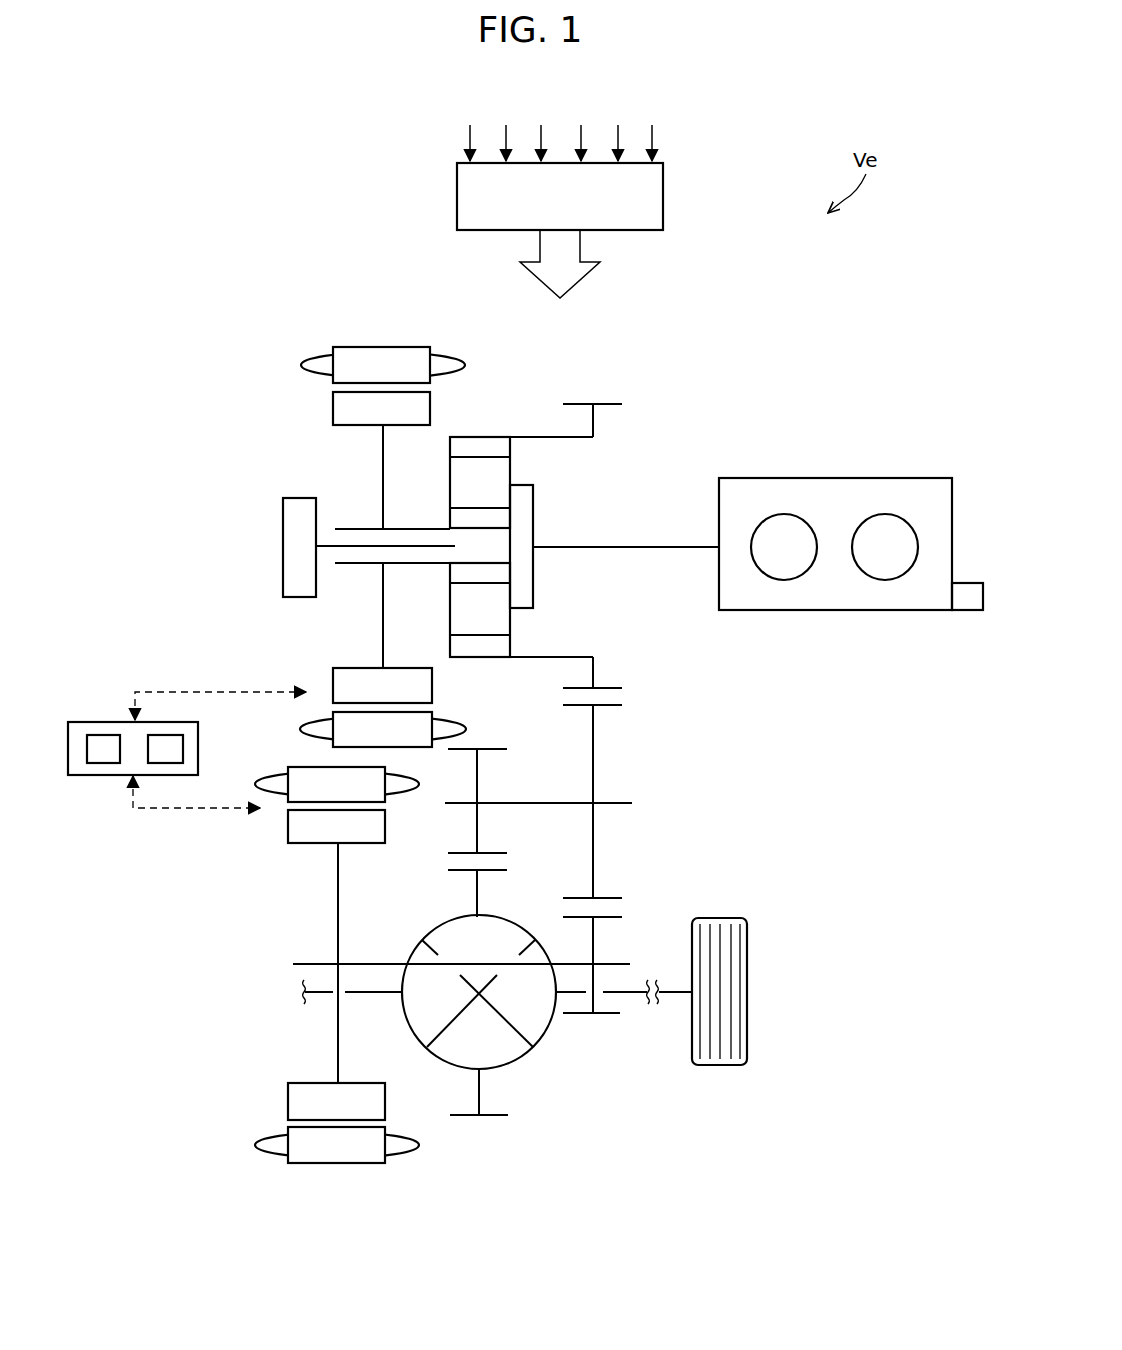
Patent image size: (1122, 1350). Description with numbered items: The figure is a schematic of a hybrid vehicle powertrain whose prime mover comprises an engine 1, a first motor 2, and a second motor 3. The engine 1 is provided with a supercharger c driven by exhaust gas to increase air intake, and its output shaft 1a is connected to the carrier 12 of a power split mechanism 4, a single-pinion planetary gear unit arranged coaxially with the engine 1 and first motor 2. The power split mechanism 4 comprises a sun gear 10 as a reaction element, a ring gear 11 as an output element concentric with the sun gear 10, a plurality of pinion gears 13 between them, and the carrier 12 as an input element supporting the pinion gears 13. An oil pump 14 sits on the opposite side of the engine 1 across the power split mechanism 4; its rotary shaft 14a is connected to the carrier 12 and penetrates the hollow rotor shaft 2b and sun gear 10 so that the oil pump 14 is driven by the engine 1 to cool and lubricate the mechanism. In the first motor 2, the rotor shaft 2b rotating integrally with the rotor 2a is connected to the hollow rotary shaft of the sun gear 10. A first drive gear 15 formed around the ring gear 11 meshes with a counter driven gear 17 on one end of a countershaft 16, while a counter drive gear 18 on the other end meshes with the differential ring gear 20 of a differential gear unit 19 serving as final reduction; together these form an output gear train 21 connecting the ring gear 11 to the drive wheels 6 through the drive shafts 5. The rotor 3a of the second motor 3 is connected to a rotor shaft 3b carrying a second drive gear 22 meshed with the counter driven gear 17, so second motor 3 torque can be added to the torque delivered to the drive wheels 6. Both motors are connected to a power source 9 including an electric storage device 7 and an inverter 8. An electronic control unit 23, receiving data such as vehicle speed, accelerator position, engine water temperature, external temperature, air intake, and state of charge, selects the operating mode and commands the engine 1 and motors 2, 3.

The engine 1 is at (843, 612).
The output shaft 1a is at (672, 542).
The supercharger c is at (973, 612).
The first motor 2 is at (340, 522).
The rotor 2a is at (332, 410).
The rotor shaft 2b is at (352, 565).
The second motor 3 is at (304, 981).
The rotor 3a is at (287, 833).
The rotor shaft 3b is at (380, 962).
The power split mechanism 4 is at (528, 521).
The drive shafts 5 is at (637, 998).
The drive wheels 6 is at (718, 1067).
The electric storage device 7 is at (100, 765).
The inverter 8 is at (185, 747).
The power source 9 is at (150, 752).
The sun gear 10 is at (450, 574).
The ring gear 11 is at (483, 437).
The carrier 12 is at (533, 509).
The pinion gears 13 is at (490, 460).
The oil pump 14 is at (297, 599).
The rotary shaft 14a is at (323, 545).
The first drive gear 15 is at (603, 403).
The countershaft 16 is at (550, 802).
The counter driven gear 17 is at (614, 703).
The counter drive gear 18 is at (487, 749).
The differential gear unit 19 is at (513, 1068).
The differential ring gear 20 is at (487, 1120).
The output gear train 21 is at (644, 777).
The second drive gear 22 is at (605, 1017).
The electronic control unit 23 is at (664, 200).